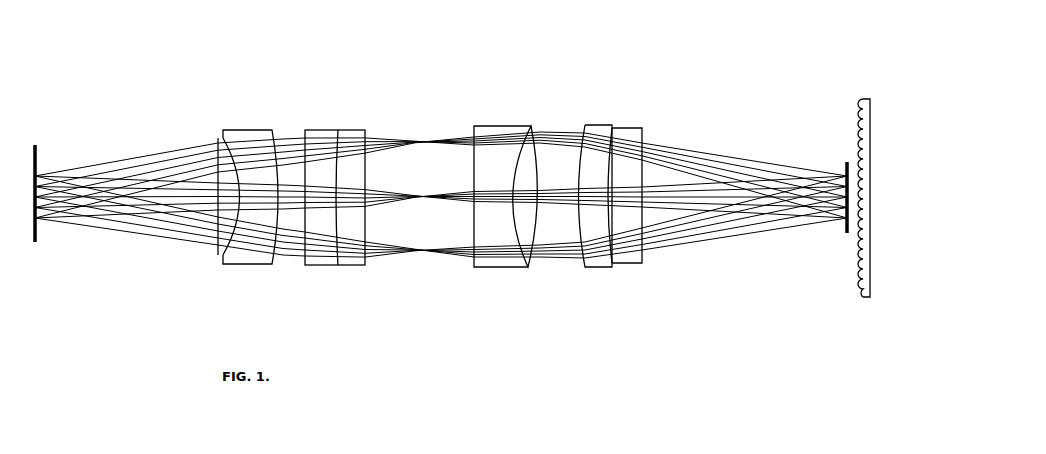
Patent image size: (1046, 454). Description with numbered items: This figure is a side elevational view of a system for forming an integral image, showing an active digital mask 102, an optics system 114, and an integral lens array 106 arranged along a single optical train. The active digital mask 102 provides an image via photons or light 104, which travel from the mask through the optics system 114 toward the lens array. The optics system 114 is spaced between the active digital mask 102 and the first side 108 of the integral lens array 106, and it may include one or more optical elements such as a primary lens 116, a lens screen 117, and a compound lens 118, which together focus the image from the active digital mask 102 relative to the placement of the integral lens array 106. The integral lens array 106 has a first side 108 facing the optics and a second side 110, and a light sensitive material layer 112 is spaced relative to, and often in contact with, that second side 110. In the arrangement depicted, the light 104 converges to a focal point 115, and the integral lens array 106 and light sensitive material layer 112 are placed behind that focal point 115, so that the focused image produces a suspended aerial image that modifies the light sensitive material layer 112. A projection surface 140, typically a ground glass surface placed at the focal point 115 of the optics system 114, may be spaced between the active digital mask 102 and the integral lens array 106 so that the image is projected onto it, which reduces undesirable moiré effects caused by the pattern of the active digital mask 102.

The active digital mask 102 is at (36, 157).
The photons or light 104 is at (125, 246).
The integral lens array 106 is at (858, 263).
The first side 108 is at (851, 130).
The second side 110 is at (878, 278).
The light sensitive material layer 112 is at (870, 132).
The optics system 114 is at (428, 297).
The focal point 115 is at (847, 241).
The primary lens 116 is at (531, 125).
The lens screen 117 is at (493, 125).
The compound lens 118 is at (474, 272).
The projection surface 140 is at (803, 238).